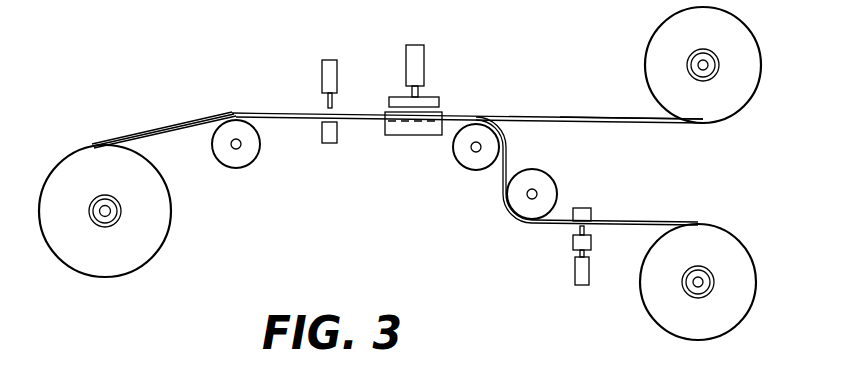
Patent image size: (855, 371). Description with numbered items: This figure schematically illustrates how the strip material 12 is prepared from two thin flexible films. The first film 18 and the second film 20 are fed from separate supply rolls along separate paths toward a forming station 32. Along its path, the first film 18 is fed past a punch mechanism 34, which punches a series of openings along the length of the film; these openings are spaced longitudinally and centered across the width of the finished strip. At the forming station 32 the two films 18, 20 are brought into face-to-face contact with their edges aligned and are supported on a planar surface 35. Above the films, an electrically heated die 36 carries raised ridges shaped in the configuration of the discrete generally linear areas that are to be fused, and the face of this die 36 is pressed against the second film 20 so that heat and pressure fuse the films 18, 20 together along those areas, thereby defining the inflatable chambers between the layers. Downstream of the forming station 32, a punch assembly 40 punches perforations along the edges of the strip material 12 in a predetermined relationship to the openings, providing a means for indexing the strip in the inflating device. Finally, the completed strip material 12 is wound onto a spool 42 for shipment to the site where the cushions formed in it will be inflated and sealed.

The strip material 12 is at (168, 127).
The first film 18 is at (640, 219).
The second film 20 is at (608, 117).
The forming station 32 is at (432, 68).
The punch mechanism 34 is at (566, 242).
The planar surface 35 is at (418, 126).
The electrically heated die 36 is at (397, 97).
The punch assembly 40 is at (329, 56).
The spool 42 is at (103, 227).